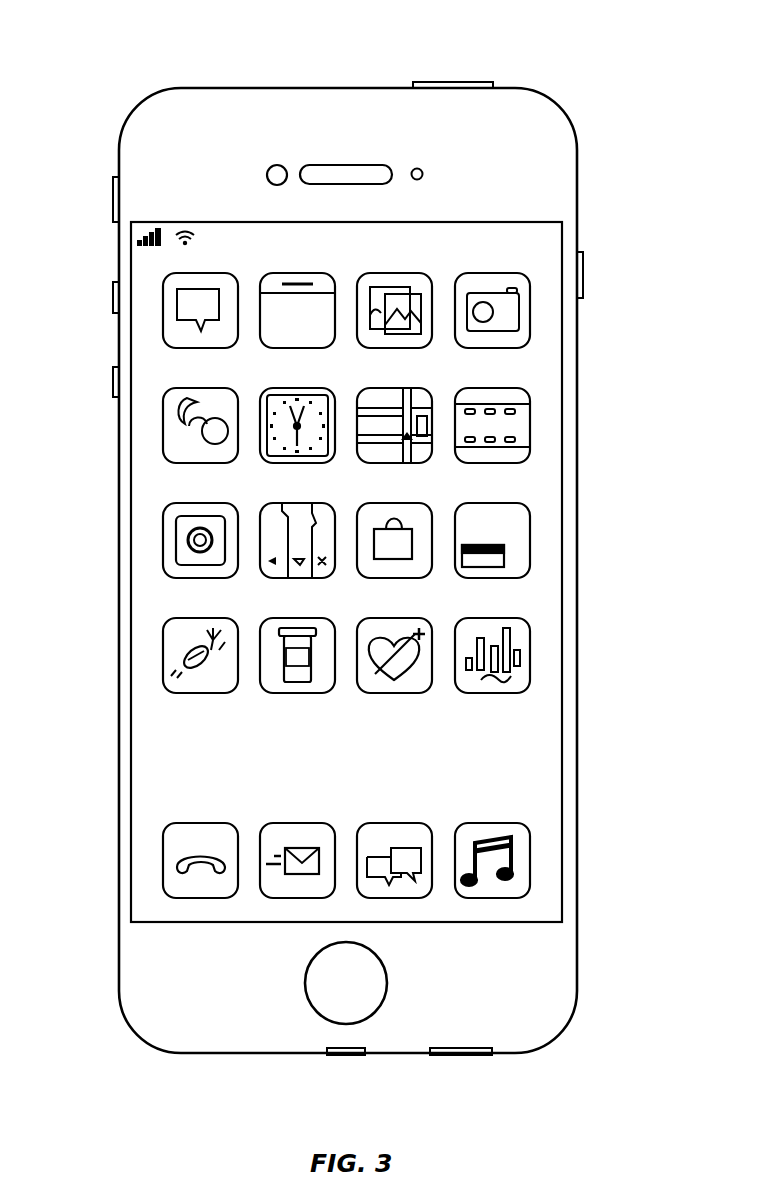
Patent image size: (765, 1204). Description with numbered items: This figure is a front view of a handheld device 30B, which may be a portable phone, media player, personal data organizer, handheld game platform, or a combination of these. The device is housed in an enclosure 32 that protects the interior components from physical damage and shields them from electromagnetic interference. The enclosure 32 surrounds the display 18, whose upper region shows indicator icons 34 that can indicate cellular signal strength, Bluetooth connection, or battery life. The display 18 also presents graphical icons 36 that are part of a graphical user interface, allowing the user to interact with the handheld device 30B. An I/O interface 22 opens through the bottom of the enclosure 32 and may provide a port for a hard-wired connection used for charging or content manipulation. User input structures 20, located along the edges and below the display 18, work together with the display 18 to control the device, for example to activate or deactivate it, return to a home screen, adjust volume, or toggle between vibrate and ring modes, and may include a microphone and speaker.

The handheld device 30B is at (123, 82).
The user input structures 20 is at (453, 82).
The enclosure 32 is at (578, 176).
The indicator icons 34 is at (186, 226).
The graphical icons 36 is at (538, 540).
The display 18 is at (563, 617).
The I/O interface 22 is at (347, 1056).